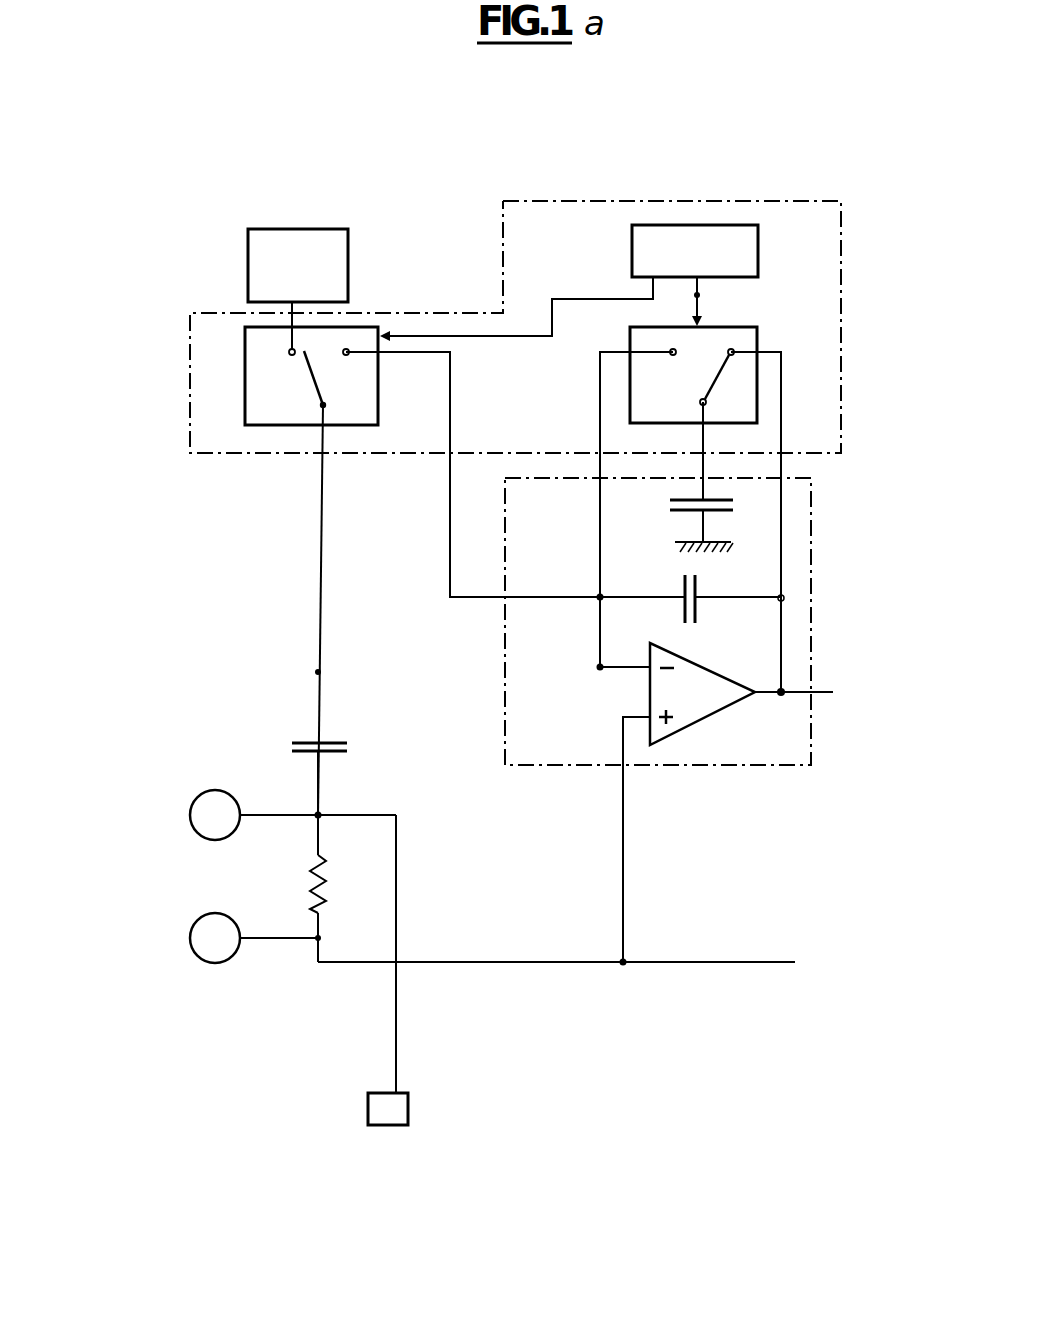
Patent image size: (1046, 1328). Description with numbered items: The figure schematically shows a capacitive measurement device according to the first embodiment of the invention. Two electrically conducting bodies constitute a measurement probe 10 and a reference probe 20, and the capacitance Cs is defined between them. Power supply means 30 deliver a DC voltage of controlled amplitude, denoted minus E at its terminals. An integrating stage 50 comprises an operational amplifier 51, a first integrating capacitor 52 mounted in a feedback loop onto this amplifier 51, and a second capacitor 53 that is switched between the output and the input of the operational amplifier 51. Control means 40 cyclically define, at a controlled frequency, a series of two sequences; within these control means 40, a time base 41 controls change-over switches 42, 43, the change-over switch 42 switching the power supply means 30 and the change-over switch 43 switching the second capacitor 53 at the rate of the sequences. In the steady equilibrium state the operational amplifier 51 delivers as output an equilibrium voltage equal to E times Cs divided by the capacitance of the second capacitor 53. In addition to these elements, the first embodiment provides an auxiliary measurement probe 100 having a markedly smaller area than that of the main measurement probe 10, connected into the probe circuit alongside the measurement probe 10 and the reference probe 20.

The measurement probe 10 is at (222, 786).
The reference probe 20 is at (230, 970).
The power supply means 30 is at (281, 226).
The control means 40 is at (845, 258).
The time base 41 is at (758, 243).
The change-over switch 42 is at (266, 425).
The change-over switch 43 is at (630, 403).
The integrating stage 50 is at (530, 766).
The operational amplifier 51 is at (697, 722).
The first integrating capacitor 52 is at (708, 608).
The second capacitor 53 is at (668, 508).
The auxiliary measurement probe 100 is at (378, 1126).